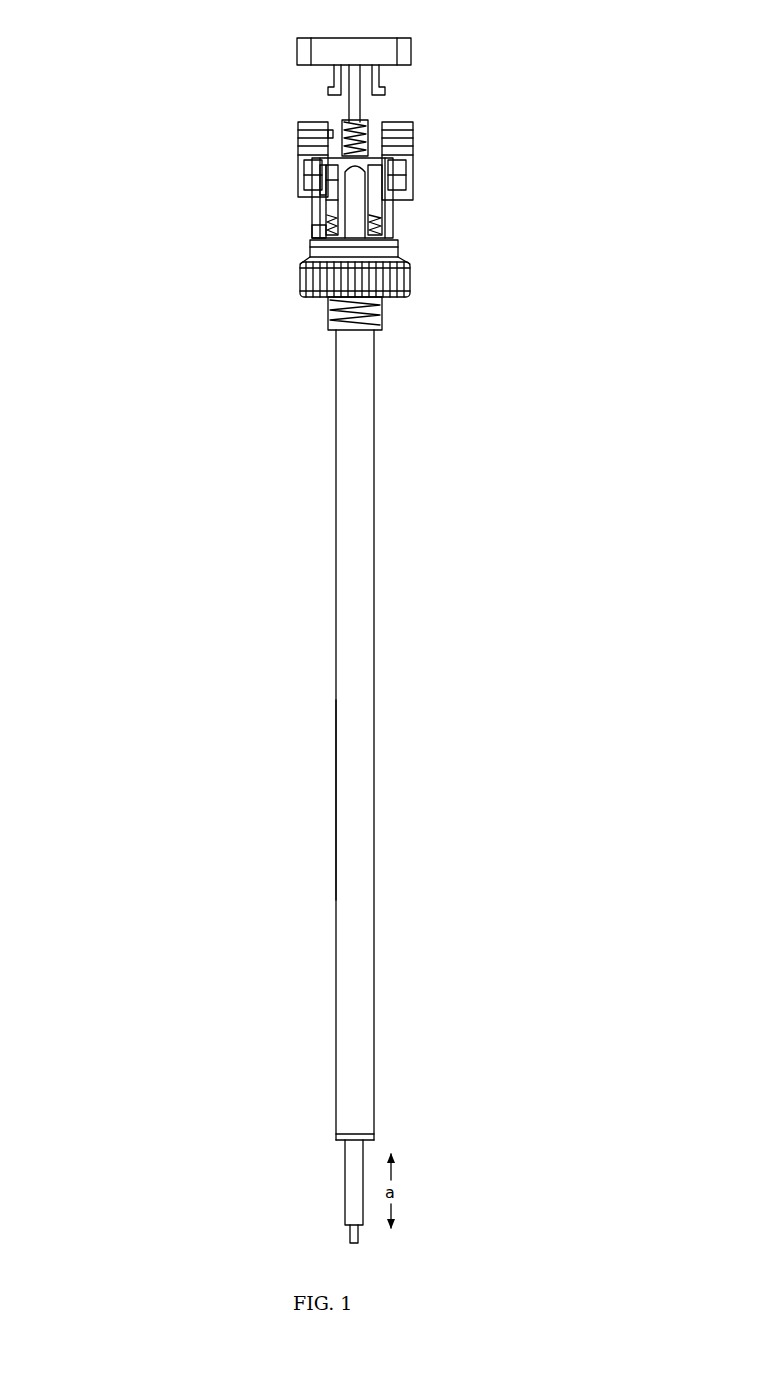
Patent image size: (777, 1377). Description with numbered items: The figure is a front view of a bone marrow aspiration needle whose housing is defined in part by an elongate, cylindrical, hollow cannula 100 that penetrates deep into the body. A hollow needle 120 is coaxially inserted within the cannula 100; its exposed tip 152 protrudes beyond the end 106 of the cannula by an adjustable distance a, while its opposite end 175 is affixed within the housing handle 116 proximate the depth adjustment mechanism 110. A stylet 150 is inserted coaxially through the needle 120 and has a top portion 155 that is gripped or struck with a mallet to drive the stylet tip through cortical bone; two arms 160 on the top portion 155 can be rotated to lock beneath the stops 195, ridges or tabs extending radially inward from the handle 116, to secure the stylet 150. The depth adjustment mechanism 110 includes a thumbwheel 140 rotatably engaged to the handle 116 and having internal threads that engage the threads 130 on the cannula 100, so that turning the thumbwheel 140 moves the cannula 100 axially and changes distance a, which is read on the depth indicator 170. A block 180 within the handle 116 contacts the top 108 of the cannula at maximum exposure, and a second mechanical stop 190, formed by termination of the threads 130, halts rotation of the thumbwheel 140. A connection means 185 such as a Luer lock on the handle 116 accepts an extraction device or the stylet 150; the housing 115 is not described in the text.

The cannula 100 is at (306, 944).
The end of the cannula 106 is at (375, 1140).
The top of the cannula 108 is at (322, 198).
The depth adjustment mechanism 110 is at (290, 313).
The housing 115 is at (370, 166).
The housing handle 116 is at (402, 228).
The hollow needle 120 is at (334, 1182).
The threads 130 is at (395, 323).
The thumbwheel 140 is at (422, 281).
The stylet 150 is at (363, 100).
The stylet tip 152 is at (334, 1242).
The top portion of the stylet 155 is at (430, 53).
The arms 160 is at (312, 77).
The depth indicator 170 is at (324, 175).
The opposite end of the needle 175 is at (364, 185).
The block 180 is at (330, 185).
The connection means 185 is at (370, 136).
The second mechanical stop 190 is at (318, 228).
The stops 195 is at (326, 135).